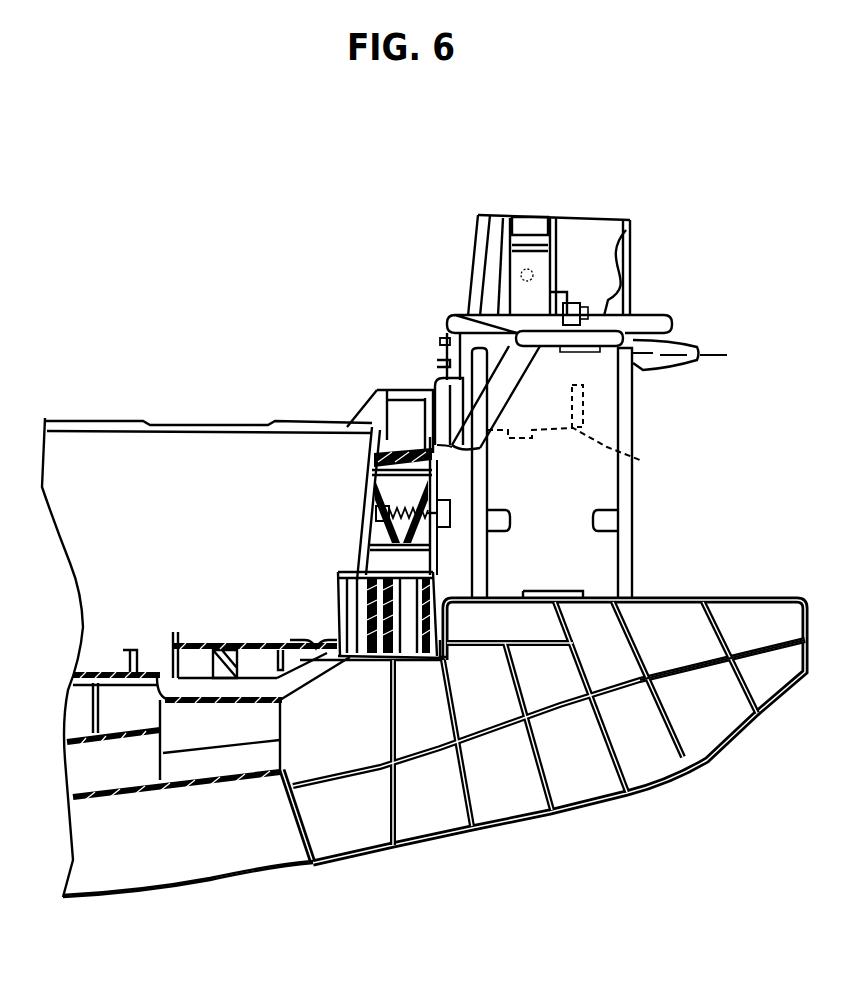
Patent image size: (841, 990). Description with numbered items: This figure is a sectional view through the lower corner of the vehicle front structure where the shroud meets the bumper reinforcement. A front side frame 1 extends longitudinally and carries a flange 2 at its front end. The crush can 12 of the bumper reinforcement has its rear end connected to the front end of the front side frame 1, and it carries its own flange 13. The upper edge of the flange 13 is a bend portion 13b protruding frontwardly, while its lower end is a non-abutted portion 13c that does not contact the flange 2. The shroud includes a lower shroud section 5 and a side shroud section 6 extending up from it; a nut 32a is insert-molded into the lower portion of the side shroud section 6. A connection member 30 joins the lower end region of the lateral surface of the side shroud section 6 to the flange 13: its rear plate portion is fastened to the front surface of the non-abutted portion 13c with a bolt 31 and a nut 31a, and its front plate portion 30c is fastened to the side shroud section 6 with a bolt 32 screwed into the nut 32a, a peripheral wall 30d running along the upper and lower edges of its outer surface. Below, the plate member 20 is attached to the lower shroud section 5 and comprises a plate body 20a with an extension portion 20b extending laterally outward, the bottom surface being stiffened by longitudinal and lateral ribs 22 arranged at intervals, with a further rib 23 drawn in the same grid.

The front side frame 1 is at (592, 232).
The flange 2 is at (676, 322).
The lower shroud section 5 is at (182, 453).
The side shroud section 6 is at (408, 407).
The crush can 12 is at (605, 488).
The flange 13 is at (698, 348).
The bend portion 13b is at (640, 460).
The non-abutted portion 13c is at (540, 328).
The plate member 20 is at (379, 887).
The plate body 20a is at (660, 598).
The extension portion 20b is at (183, 888).
The ribs 22 is at (670, 727).
The cross rib 23 is at (700, 655).
The connection member 30 is at (515, 380).
The front plate portion 30c is at (465, 490).
The peripheral wall 30d is at (466, 470).
The bolt 31 is at (574, 348).
The nut 31a is at (585, 322).
The bolt 32 is at (472, 522).
The nut 32a is at (376, 514).